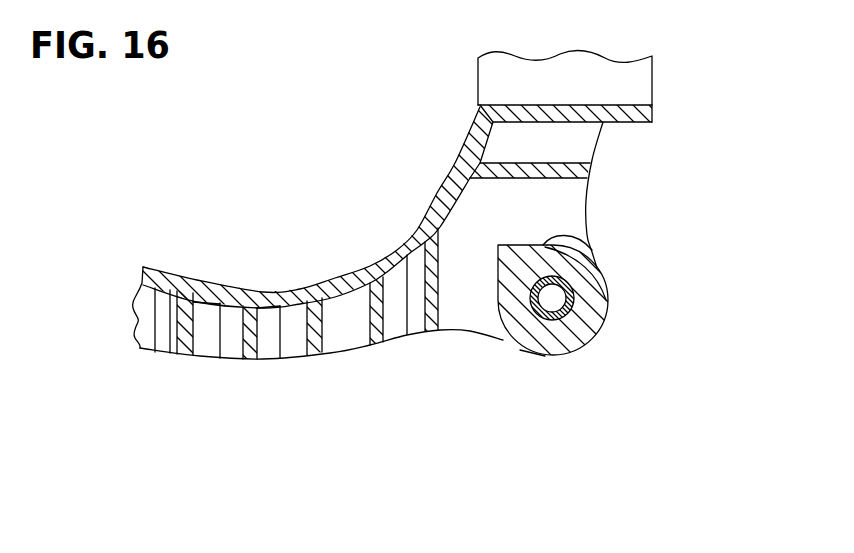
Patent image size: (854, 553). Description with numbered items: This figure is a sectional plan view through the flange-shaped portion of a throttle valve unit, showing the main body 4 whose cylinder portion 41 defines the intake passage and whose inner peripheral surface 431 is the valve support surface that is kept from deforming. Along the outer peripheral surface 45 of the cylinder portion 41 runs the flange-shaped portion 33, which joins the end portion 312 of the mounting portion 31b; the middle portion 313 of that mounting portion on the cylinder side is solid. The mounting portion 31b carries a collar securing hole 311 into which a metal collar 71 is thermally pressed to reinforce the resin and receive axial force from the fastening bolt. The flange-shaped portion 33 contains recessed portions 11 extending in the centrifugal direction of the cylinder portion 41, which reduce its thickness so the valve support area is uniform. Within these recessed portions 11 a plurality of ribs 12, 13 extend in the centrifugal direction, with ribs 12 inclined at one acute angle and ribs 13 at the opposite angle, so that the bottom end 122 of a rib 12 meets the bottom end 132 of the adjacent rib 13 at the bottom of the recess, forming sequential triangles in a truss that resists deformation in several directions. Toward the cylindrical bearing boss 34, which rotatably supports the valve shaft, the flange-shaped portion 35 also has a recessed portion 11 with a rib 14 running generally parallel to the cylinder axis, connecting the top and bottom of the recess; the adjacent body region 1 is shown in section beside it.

The main body 1 is at (588, 223).
The main body 4 is at (190, 276).
The recessed portion 11 is at (580, 148).
The rib 12 is at (197, 358).
The rib 13 is at (247, 360).
The rib 14 is at (582, 172).
The flange-shaped portion 33 is at (588, 200).
The bearing boss 34 is at (647, 112).
The flange-shaped portion 35 is at (287, 362).
The cylinder portion 41 is at (473, 121).
The outer peripheral surface 45 is at (218, 358).
The collar 71 is at (575, 305).
The bottom end of rib 12 122 is at (291, 290).
The bottom end of rib 13 132 is at (275, 317).
The collar securing hole 311 is at (533, 355).
The end portion 312 is at (590, 247).
The middle portion 313 is at (475, 232).
The mounting portion 31b is at (568, 343).
The inner peripheral surface 431 is at (158, 266).